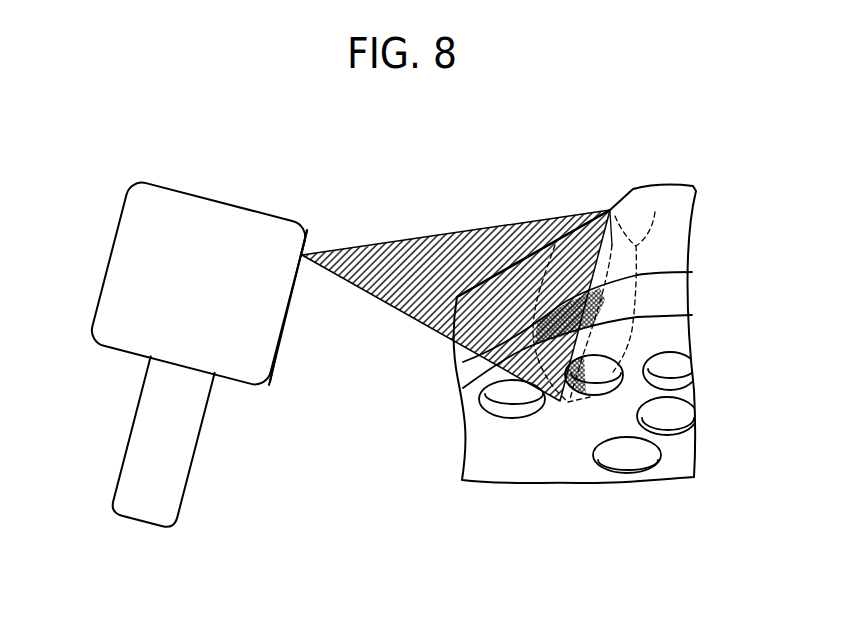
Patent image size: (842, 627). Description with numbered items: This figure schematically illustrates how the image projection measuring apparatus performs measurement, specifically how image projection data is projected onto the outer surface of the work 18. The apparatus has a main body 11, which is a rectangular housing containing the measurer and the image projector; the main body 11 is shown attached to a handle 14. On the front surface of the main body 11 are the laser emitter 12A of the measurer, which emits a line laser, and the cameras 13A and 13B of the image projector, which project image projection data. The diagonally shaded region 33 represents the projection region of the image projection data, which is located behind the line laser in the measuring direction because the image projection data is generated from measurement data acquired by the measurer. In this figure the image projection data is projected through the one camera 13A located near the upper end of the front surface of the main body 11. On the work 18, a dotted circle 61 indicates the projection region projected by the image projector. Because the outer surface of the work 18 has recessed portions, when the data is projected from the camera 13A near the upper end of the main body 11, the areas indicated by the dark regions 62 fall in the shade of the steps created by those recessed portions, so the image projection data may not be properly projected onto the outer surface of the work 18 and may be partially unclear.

The main body 11 is at (168, 193).
The handle 14 is at (137, 437).
The laser emitter 12A is at (288, 308).
The camera 13A is at (305, 254).
The camera 13B is at (273, 368).
The diagonally shaded region 33 is at (447, 238).
The work 18 is at (678, 257).
The dotted circle 61 is at (655, 212).
The dark regions 62 is at (610, 212).